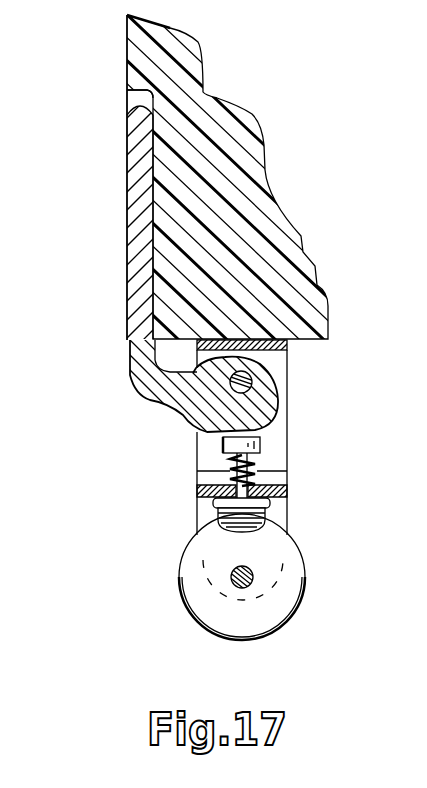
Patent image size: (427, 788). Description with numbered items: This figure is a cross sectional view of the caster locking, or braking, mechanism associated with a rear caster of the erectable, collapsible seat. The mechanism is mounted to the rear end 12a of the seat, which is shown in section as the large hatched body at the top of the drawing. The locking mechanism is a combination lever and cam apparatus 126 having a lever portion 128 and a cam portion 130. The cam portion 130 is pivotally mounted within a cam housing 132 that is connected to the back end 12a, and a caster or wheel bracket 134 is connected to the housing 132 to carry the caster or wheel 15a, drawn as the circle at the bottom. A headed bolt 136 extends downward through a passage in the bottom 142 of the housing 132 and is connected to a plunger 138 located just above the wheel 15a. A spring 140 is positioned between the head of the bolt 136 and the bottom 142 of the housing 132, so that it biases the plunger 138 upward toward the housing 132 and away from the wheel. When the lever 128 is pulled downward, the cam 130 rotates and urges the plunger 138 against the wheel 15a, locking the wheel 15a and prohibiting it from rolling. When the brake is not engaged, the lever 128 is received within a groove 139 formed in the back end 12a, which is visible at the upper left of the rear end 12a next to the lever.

The rear end 12a is at (252, 147).
The combination lever and cam apparatus 126 is at (104, 175).
The lever portion 128 is at (128, 260).
The groove 139 is at (135, 98).
The cam portion 130 is at (260, 392).
The cam housing 132 is at (287, 445).
The caster or wheel bracket 134 is at (280, 514).
The headed bolt 136 is at (222, 445).
The plunger 138 is at (215, 513).
The spring 140 is at (233, 472).
The bottom of housing 142 is at (273, 486).
The caster or wheel 15a is at (305, 585).